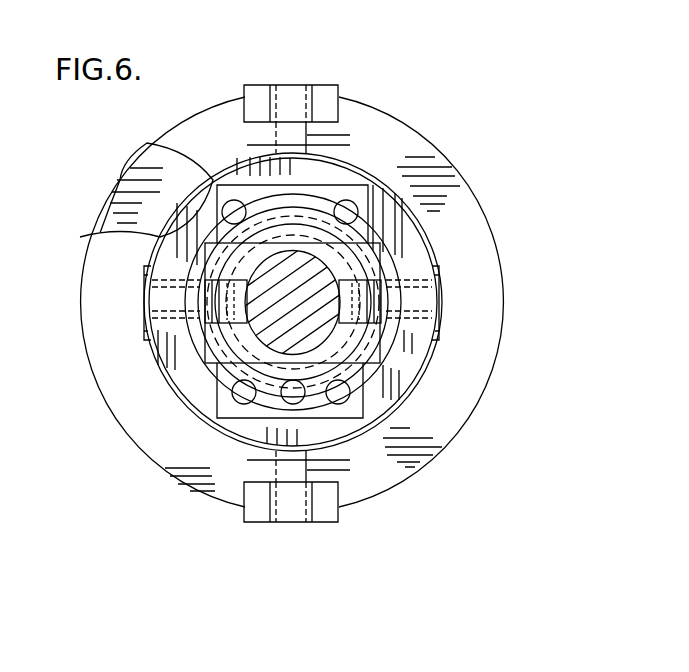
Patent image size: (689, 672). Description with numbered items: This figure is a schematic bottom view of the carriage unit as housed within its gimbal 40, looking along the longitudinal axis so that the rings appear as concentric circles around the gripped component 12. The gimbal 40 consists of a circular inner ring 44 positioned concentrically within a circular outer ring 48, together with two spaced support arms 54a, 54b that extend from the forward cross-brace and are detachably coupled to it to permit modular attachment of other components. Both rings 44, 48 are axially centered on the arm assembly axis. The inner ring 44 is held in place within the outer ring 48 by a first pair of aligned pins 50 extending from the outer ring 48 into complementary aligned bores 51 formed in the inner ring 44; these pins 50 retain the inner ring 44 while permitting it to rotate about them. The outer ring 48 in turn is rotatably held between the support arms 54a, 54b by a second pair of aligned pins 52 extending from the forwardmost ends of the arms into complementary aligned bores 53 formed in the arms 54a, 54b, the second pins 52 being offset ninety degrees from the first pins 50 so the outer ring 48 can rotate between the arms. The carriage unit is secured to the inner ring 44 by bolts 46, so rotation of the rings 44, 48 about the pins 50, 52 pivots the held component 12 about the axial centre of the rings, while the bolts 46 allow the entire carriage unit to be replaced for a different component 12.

The component 12 is at (368, 340).
The gimbal 40 is at (478, 345).
The inner ring 44 is at (378, 365).
The bolts 46 is at (222, 200).
The outer ring 48 is at (457, 205).
The first pair of aligned pins 50 is at (418, 303).
The aligned bores 51 is at (157, 255).
The second pair of aligned pins 52 is at (292, 95).
The aligned bores 53 is at (313, 102).
The support arm 54a is at (245, 510).
The support arm 54b is at (255, 95).